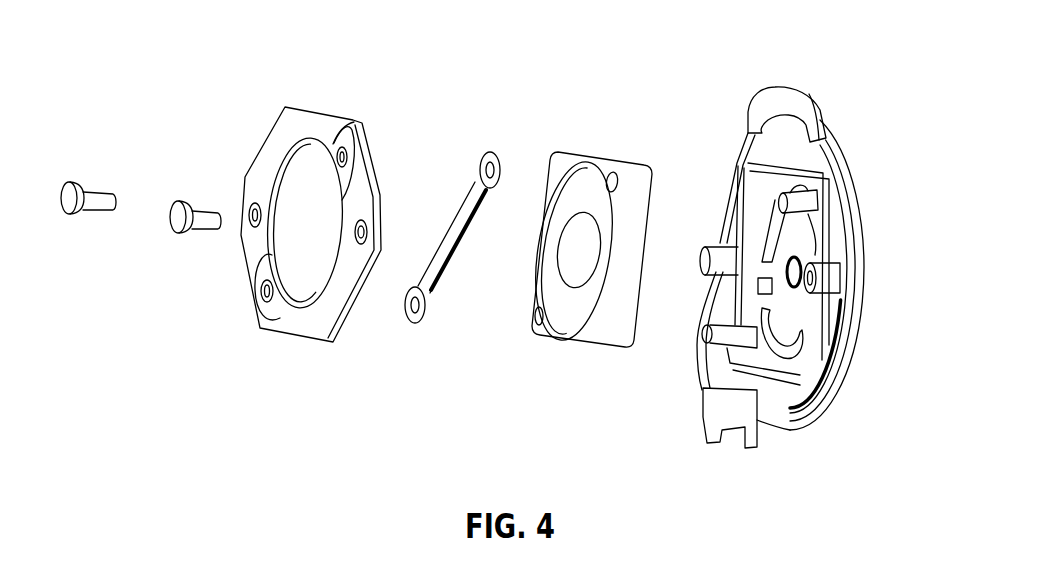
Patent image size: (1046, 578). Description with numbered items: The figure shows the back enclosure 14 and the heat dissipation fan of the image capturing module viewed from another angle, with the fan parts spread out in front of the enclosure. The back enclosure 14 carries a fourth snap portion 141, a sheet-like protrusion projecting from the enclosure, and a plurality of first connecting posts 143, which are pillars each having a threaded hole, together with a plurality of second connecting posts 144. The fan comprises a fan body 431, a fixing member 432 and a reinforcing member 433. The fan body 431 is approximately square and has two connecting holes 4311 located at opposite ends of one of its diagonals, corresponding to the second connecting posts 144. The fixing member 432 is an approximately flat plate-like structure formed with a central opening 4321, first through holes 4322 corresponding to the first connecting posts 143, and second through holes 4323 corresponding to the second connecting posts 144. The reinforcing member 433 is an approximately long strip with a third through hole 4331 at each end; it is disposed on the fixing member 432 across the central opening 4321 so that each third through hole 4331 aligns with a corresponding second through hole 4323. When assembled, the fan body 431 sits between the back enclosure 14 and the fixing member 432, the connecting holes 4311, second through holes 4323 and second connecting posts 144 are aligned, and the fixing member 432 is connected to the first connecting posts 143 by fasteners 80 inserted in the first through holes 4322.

The back enclosure 14 is at (816, 240).
The fourth snap portion 141 is at (785, 100).
The first connecting posts 143 is at (829, 286).
The second connecting posts 144 is at (803, 203).
The fasteners 80 is at (202, 213).
The fan body 431 is at (603, 247).
The connecting holes 4311 is at (610, 177).
The fixing member 432 is at (305, 235).
The central opening 4321 is at (313, 262).
The first through holes 4322 is at (365, 231).
The second through holes 4323 is at (262, 290).
The reinforcing member 433 is at (428, 282).
The third through holes 4331 is at (406, 316).